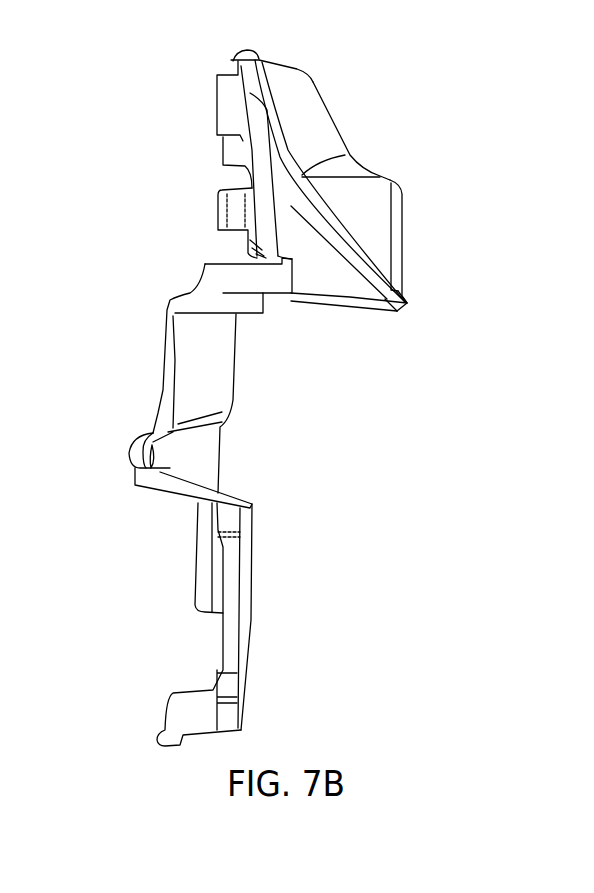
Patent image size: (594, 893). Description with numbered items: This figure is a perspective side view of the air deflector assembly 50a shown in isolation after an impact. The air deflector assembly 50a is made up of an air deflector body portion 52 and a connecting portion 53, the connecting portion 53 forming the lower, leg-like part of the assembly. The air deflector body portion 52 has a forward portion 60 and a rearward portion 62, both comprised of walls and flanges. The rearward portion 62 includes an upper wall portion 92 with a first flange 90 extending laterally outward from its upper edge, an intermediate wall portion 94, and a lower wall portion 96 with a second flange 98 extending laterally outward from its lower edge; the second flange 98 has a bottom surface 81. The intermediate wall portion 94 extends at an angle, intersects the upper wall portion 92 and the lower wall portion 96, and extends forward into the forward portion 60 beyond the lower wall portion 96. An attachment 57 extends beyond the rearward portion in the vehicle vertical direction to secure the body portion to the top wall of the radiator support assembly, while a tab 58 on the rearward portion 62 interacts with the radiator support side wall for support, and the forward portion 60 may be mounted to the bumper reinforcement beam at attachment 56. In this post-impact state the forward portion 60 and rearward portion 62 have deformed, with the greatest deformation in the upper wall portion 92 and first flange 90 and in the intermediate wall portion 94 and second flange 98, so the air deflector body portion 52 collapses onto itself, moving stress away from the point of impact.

The air deflector assembly 50a is at (458, 118).
The air deflector body portion 52 is at (460, 195).
The connecting portion 53 is at (150, 404).
The attachment 56 is at (408, 303).
The attachment 57 is at (217, 77).
The tab 58 is at (218, 209).
The forward portion 60 is at (410, 250).
The rearward portion 62 is at (330, 97).
The bottom surface 81 is at (394, 312).
The first flange 90 is at (246, 51).
The upper wall portion 92 is at (292, 77).
The intermediate wall portion 94 is at (279, 160).
The lower wall portion 96 is at (326, 286).
The second flange 98 is at (306, 302).